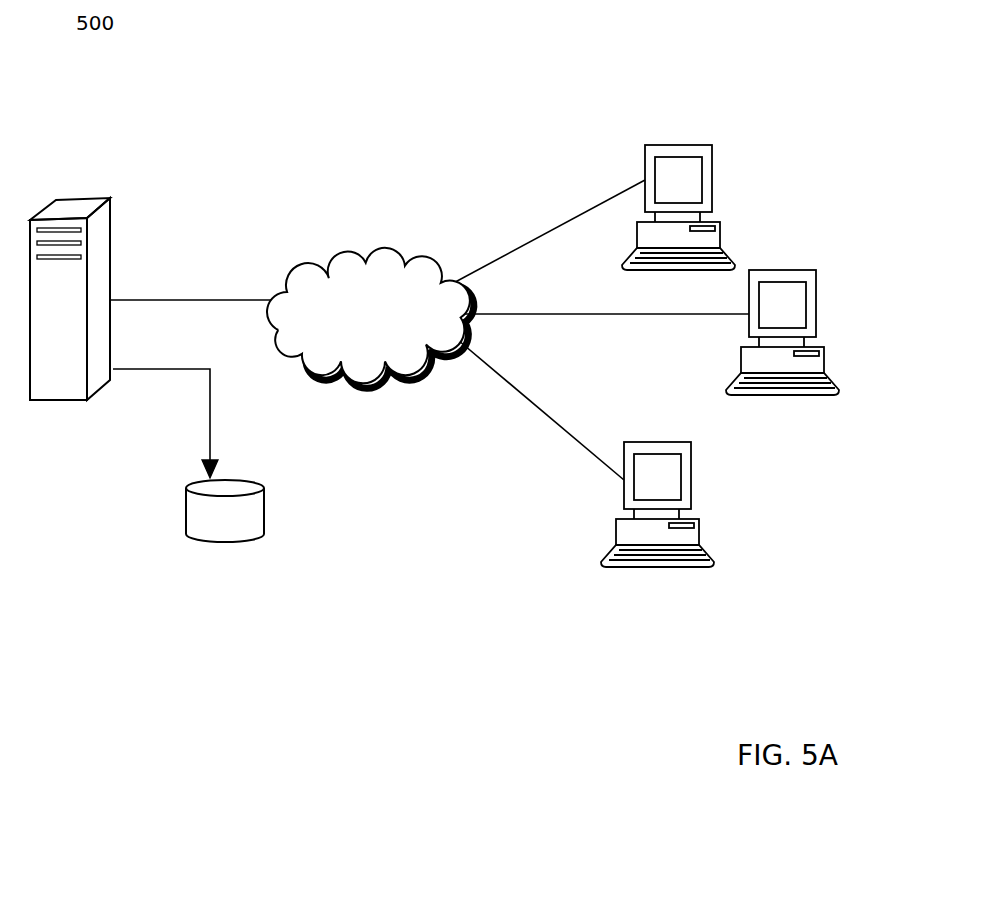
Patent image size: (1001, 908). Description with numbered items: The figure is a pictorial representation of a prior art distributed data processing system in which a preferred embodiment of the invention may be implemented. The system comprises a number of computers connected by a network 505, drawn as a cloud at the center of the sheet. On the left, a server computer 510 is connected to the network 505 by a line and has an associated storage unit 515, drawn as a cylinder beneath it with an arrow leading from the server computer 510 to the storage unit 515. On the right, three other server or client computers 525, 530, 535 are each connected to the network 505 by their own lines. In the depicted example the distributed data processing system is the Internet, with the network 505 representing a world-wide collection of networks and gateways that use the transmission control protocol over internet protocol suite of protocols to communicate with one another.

The network 505 is at (370, 318).
The server computer 510 is at (115, 250).
The storage unit 515 is at (183, 508).
The server or client computer 525 is at (730, 155).
The server or client computer 530 is at (828, 316).
The server or client computer 535 is at (702, 484).